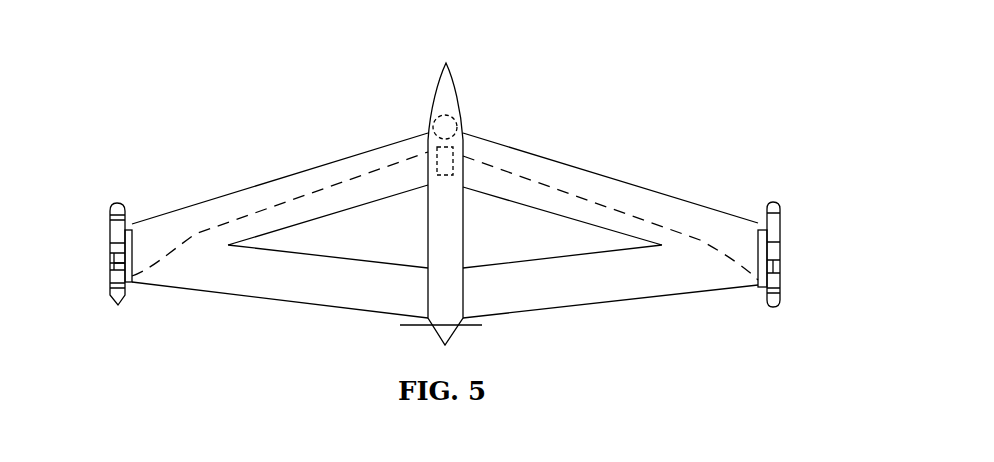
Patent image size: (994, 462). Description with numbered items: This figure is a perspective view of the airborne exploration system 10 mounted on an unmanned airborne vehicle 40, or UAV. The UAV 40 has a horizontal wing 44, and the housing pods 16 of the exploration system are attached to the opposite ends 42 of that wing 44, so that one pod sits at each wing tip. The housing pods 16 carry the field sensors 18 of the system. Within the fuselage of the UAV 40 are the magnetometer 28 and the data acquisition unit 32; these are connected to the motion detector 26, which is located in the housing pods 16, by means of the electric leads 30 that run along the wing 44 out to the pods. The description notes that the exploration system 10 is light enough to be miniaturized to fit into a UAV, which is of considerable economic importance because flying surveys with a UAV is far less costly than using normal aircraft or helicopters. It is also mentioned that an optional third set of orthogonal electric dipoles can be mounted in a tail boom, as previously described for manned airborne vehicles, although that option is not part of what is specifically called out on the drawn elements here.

The airborne exploration system 10 is at (588, 105).
The housing pods 16 is at (121, 207).
The field sensors 18 is at (474, 228).
The motion detector 26 is at (113, 292).
The magnetometer 28 is at (450, 127).
The electric leads 30 is at (258, 215).
The data acquisition unit 32 is at (448, 160).
The unmanned airborne vehicle 40 is at (450, 240).
The opposite ends 42 is at (164, 277).
The horizontal wing 44 is at (288, 188).